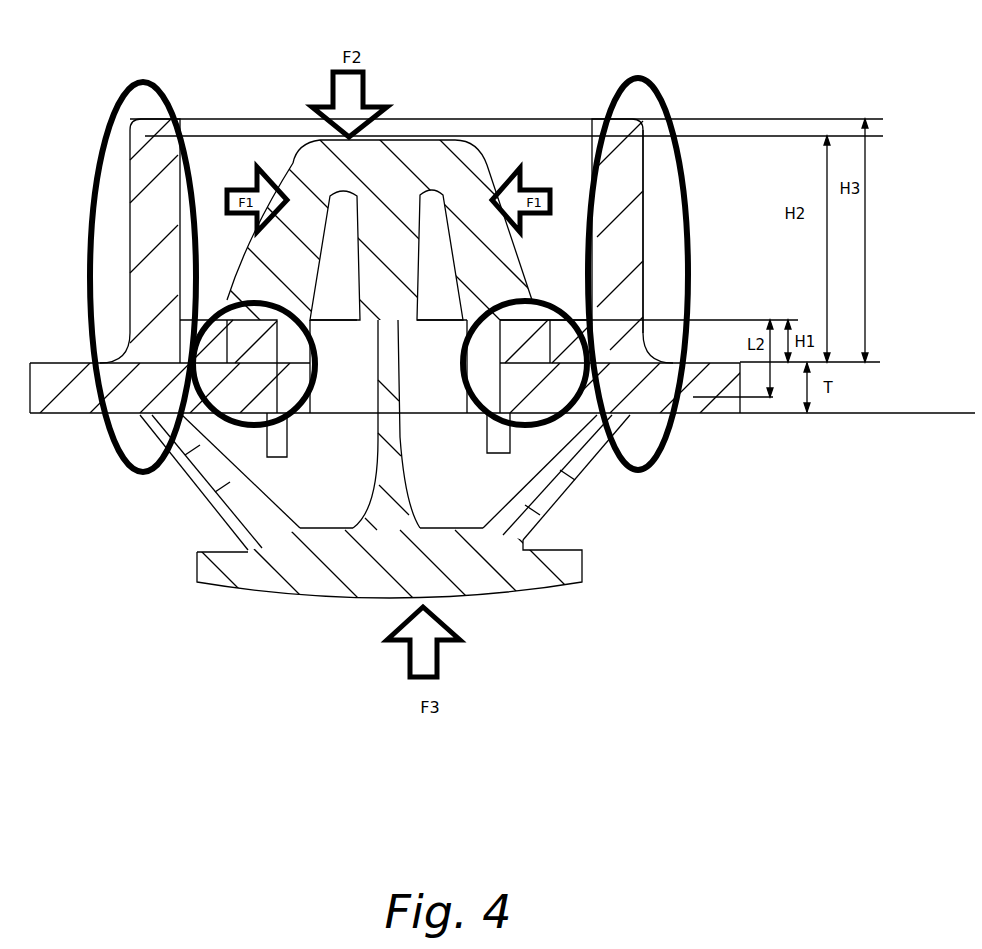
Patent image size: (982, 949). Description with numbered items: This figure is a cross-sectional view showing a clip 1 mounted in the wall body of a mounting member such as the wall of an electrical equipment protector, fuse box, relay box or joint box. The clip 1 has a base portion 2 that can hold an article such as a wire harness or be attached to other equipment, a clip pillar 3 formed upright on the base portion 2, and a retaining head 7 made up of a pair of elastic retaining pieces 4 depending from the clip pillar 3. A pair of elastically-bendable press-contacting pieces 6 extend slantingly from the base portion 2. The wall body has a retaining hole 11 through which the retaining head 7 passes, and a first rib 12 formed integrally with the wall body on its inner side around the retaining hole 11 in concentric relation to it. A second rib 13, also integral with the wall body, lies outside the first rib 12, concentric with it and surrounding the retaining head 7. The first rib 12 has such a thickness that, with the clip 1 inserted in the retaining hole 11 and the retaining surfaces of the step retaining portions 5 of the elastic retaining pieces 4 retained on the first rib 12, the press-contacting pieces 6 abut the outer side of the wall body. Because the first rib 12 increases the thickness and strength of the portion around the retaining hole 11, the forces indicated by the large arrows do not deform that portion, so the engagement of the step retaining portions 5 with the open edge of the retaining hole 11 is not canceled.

The clip 1 is at (222, 606).
The base portion 2 is at (312, 563).
The clip pillar 3 is at (400, 186).
The elastic retaining piece 4 is at (258, 258).
The step retaining portion 5 is at (520, 418).
The press-contacting piece 6 is at (187, 477).
The retaining head 7 is at (500, 157).
The retaining hole 11 is at (427, 380).
The first rib 12 is at (612, 160).
The second rib 13 is at (648, 180).